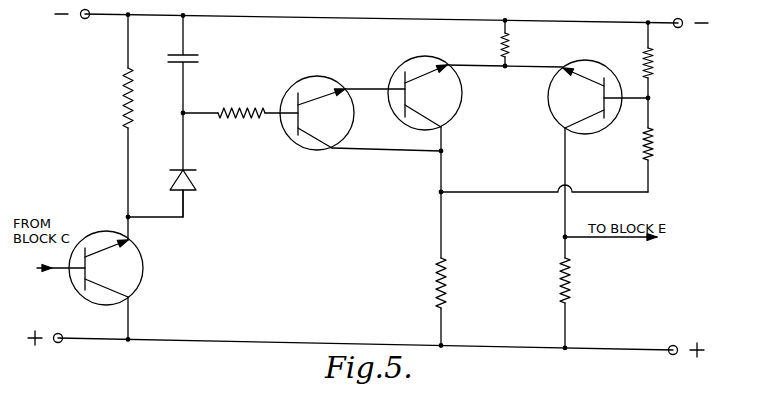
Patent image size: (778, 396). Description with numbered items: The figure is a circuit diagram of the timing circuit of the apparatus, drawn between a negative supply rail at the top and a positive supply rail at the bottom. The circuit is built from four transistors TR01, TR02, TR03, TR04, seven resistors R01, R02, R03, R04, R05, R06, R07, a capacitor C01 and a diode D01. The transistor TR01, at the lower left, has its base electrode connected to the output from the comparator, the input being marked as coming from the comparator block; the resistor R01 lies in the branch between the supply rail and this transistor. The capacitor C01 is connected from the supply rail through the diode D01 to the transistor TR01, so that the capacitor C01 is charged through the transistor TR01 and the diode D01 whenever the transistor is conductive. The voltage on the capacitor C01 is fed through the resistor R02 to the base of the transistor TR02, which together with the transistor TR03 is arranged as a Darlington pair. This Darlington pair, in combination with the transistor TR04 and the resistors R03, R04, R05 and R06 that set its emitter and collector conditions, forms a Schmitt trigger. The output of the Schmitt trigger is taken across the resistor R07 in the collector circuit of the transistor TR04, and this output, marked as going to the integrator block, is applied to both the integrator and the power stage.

The resistor R01 is at (122, 110).
The resistor R02 is at (253, 120).
The resistor R03 is at (447, 287).
The resistor R04 is at (510, 42).
The resistor R05 is at (653, 65).
The resistor R06 is at (653, 147).
The resistor R07 is at (570, 287).
The capacitor C01 is at (200, 60).
The diode D01 is at (197, 182).
The transistor TR01 is at (140, 269).
The transistor TR02 is at (327, 60).
The transistor TR03 is at (435, 48).
The transistor TR04 is at (560, 105).